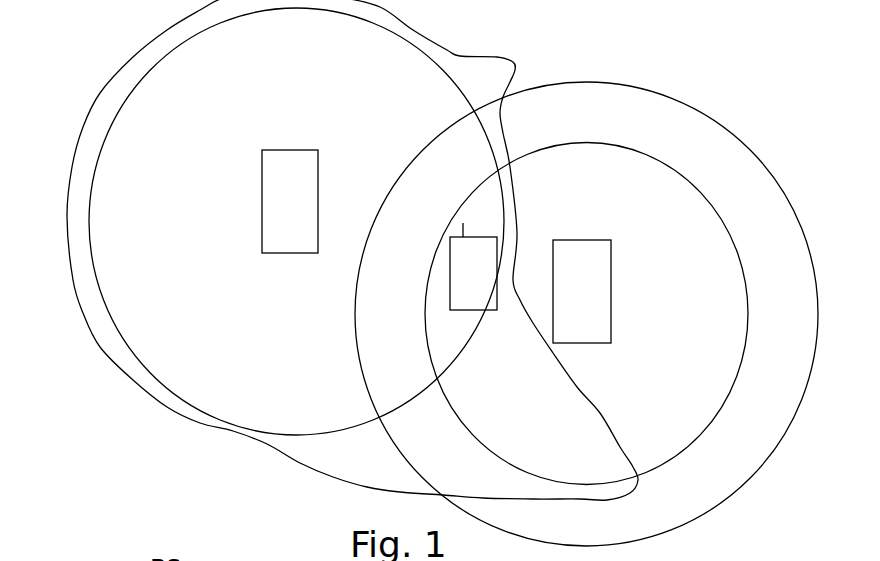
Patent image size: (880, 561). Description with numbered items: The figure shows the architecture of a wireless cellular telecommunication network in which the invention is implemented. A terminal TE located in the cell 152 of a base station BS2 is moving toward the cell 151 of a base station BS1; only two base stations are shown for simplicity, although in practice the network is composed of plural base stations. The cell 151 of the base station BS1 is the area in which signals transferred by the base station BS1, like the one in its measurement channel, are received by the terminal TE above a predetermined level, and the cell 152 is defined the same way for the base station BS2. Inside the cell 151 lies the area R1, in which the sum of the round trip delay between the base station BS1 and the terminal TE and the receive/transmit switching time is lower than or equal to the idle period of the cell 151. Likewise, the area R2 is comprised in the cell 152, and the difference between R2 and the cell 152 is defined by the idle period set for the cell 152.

The area of the base station BS1 R1 is at (145, 75).
The area of the base station BS2 R2 is at (590, 143).
The cell of the base station BS1 151 is at (70, 163).
The cell of the base station BS2 152 is at (723, 500).
The base station BS1 is at (290, 201).
The base station BS2 is at (582, 291).
The terminal TE is at (473, 266).